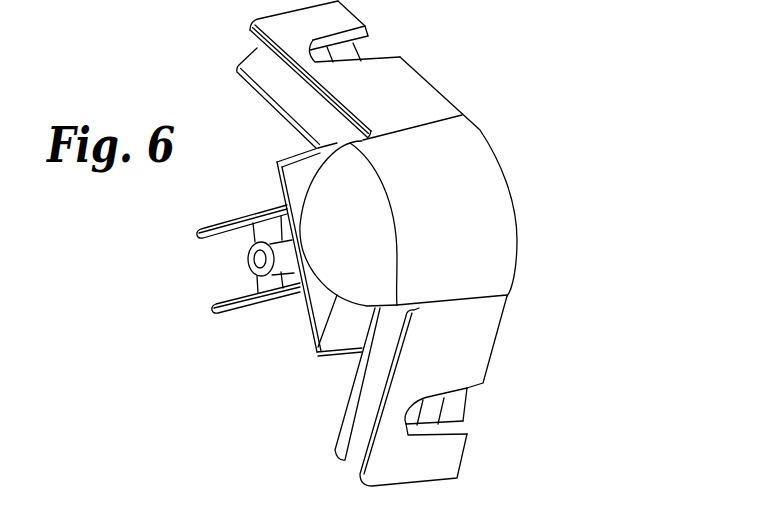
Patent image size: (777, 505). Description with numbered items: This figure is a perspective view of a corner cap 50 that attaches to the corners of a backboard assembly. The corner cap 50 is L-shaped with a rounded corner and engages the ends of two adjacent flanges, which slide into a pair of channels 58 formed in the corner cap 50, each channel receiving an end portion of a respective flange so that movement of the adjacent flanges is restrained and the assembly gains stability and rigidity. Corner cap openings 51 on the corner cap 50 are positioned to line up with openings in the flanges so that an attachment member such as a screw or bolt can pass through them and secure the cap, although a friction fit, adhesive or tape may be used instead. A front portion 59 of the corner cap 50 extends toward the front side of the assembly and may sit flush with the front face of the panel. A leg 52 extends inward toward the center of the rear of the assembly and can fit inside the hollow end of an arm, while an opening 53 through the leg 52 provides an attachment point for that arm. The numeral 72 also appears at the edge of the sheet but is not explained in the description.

The corner cap 50 is at (374, 250).
The corner cap openings 51 is at (357, 43).
The leg 52 is at (212, 317).
The opening 53 is at (250, 263).
The channels 58 is at (243, 43).
The front portion 59 is at (320, 255).
The element 72 is at (104, 497).